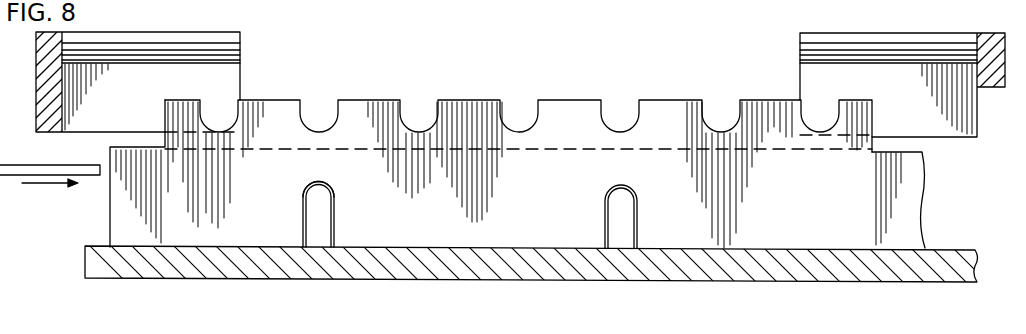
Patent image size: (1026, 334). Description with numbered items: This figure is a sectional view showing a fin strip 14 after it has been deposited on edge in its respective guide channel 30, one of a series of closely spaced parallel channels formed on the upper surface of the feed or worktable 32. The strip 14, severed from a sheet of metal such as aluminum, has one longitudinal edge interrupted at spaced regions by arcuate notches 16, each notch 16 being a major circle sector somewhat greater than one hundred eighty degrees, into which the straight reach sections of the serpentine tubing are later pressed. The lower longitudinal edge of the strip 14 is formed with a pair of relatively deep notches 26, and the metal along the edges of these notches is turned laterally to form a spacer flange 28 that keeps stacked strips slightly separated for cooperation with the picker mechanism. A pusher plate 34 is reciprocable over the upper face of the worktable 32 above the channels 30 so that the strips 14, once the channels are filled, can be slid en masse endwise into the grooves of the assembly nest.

The fin strip 14 is at (796, 195).
The arcuate notch 16 is at (310, 117).
The deep notch 26 is at (330, 200).
The spacer flange 28 is at (331, 184).
The channel 30 is at (172, 40).
The worktable 32 is at (478, 264).
The pusher plate 34 is at (27, 164).